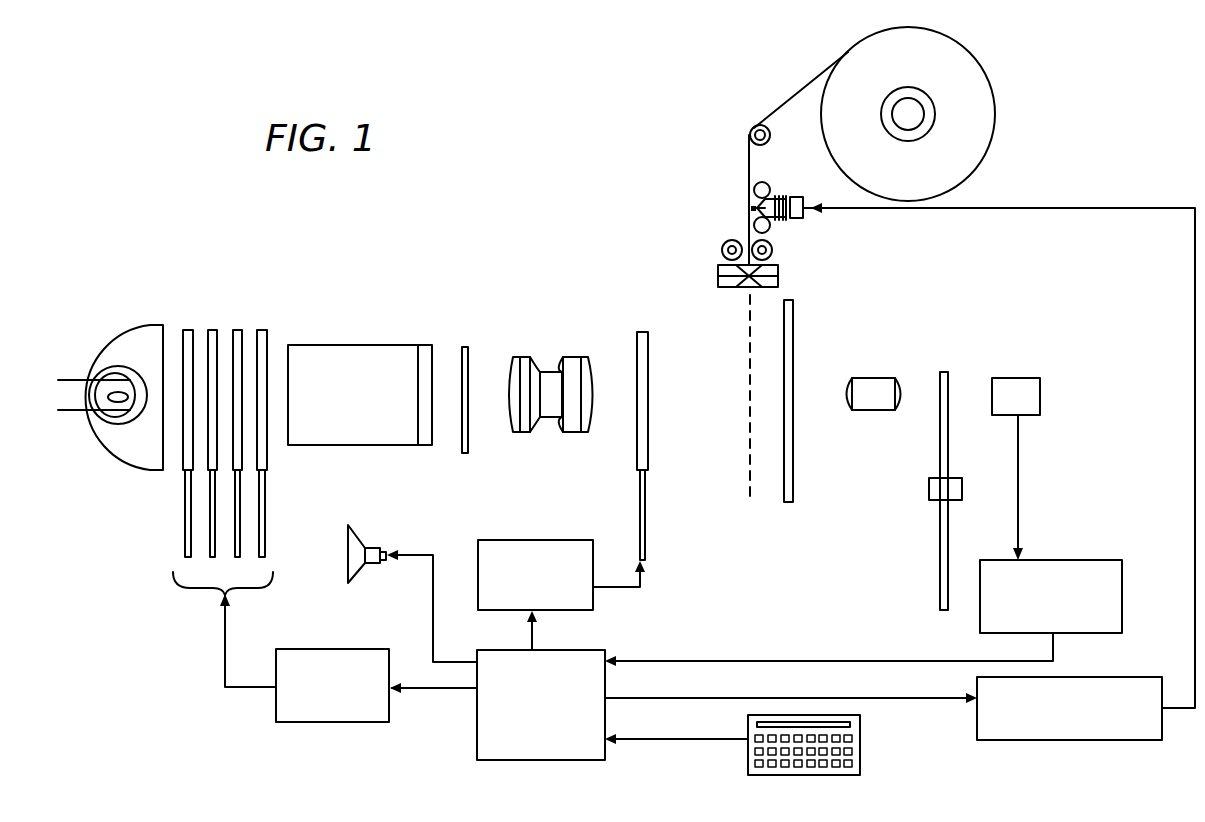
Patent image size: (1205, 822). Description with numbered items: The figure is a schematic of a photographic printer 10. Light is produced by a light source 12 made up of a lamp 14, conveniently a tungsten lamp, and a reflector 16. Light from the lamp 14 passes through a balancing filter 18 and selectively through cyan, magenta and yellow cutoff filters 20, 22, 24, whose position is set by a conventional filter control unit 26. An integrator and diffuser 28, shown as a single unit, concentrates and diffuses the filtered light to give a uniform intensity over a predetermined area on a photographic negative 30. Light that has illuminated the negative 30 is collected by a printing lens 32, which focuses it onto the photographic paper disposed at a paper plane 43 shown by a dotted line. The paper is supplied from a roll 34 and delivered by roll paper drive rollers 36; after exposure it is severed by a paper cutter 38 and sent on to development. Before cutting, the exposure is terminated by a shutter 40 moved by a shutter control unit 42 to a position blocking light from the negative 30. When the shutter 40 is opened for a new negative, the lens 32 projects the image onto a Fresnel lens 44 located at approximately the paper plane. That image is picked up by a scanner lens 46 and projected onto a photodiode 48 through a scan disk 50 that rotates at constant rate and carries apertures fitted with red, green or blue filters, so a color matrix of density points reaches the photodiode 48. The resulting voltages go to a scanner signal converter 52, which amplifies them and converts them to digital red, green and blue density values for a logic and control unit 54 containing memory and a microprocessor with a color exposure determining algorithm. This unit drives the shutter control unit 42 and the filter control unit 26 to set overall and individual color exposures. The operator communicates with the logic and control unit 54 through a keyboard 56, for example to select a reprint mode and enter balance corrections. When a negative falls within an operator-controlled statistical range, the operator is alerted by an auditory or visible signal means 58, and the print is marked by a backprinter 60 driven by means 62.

The photographic printer 10 is at (534, 268).
The light source 12 is at (102, 328).
The lamp 14 is at (132, 372).
The reflector 16 is at (102, 452).
The balancing filter 18 is at (183, 550).
The cyan cutoff filter 20 is at (212, 330).
The magenta cutoff filter 22 is at (237, 330).
The yellow cutoff filter 24 is at (263, 330).
The filter control unit 26 is at (320, 722).
The integrator and diffuser 28 is at (356, 345).
The photographic negative 30 is at (470, 362).
The printing lens 32 is at (556, 372).
The paper supply reel 34 is at (996, 122).
The roll paper drive rollers 36 is at (773, 250).
The paper cutter 38 is at (778, 273).
The shutter 40 is at (641, 332).
The shutter control unit 42 is at (545, 540).
The paper plane 43 is at (740, 397).
The Fresnel lens 44 is at (793, 462).
The scanner lens 46 is at (878, 378).
The photodiode 48 is at (1030, 378).
The scan disk 50 is at (950, 380).
The scanner signal converter 52 is at (1092, 560).
The logic and control unit 54 is at (605, 650).
The keyboard 56 is at (860, 719).
The auditory or visible signal means 58 is at (375, 547).
The backprinter 60 is at (798, 197).
The backprinter drive means 62 is at (1145, 677).